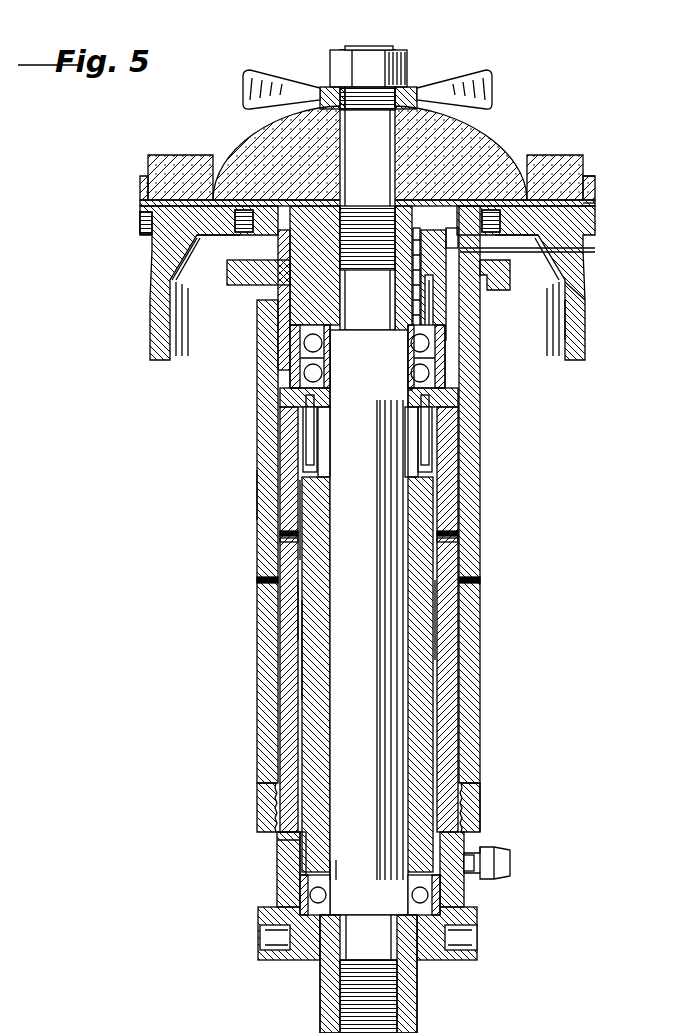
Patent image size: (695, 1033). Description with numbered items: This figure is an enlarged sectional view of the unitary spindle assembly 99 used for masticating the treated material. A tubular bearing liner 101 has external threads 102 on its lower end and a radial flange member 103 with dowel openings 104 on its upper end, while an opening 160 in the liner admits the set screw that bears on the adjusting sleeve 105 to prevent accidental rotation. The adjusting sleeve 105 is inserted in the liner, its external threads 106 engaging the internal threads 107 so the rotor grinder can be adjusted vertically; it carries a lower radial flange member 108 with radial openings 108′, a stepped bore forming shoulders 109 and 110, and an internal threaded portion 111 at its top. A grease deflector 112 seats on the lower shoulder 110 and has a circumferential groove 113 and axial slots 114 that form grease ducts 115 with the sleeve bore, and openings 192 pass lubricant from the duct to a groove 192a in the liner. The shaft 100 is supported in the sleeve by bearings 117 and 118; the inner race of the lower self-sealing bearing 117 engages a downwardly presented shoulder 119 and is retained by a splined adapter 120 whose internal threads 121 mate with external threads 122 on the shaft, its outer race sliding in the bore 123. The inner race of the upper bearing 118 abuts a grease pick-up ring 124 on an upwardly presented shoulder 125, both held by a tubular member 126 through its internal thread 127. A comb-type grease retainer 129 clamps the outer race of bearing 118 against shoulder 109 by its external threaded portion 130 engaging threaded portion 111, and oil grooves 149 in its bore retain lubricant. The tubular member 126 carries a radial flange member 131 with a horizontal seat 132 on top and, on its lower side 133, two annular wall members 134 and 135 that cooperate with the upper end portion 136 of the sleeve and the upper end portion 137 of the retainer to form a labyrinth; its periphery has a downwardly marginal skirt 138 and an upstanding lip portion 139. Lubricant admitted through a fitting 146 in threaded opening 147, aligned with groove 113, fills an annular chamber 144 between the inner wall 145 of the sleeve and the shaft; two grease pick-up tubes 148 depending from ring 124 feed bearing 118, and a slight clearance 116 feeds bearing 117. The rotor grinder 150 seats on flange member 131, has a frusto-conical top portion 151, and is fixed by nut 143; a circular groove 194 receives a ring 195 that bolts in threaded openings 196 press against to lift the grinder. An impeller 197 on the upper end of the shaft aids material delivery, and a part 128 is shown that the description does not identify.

The unitary spindle assembly 99 is at (258, 487).
The shaft 100 is at (390, 46).
The tubular bearing liner 101 is at (482, 745).
The external threads 102 is at (482, 796).
The radial flange member 103 is at (580, 290).
The dowel openings 104 is at (586, 296).
The adjusting sleeve 105 is at (455, 637).
The external threads 106 is at (258, 800).
The internal threads 107 is at (285, 838).
The radial flange member 108 is at (262, 913).
The openings 108′ is at (262, 942).
The shoulder 109 is at (290, 397).
The shoulder 110 is at (285, 895).
The internal threaded portion 111 is at (262, 264).
The grease deflector 112 is at (312, 732).
The circumferential groove 113 is at (300, 855).
The axially formed slots 114 is at (305, 650).
The grease ducts 115 is at (300, 515).
The clearance 116 is at (298, 605).
The bearing 117 is at (440, 898).
The bearing 118 is at (300, 374).
The shoulder 119 is at (330, 870).
The splined adapter 120 is at (418, 1020).
The internal threads 121 is at (408, 995).
The external threads 122 is at (340, 1005).
The bore 123 is at (302, 897).
The grease pick-up ring 124 is at (458, 397).
The shoulder 125 is at (395, 403).
The tubular member 126 is at (304, 337).
The internal thread 127 is at (290, 270).
The support bar 128 is at (284, 312).
The grease retainer 129 is at (438, 292).
The external threaded portion 130 is at (505, 283).
The radial flange member 131 is at (190, 228).
The horizontal seat 132 is at (592, 208).
The lower side 133 is at (200, 252).
The annular wall member 134 is at (253, 238).
The annular wall member 135 is at (575, 255).
The upper end portion 136 is at (443, 274).
The upper end portion 137 is at (414, 298).
The downwardly marginal skirt 138 is at (150, 320).
The upstanding lip portion 139 is at (143, 203).
The nut 143 is at (410, 63).
The annular chamber 144 is at (440, 466).
The inner wall 145 is at (302, 466).
The admitting fitting 146 is at (510, 853).
The threaded opening 147 is at (458, 866).
The grease pick-up tubes 148 is at (305, 446).
The oil grooves 149 is at (438, 312).
The rotor grinder 150 is at (586, 178).
The frusto-conical top portion 151 is at (515, 130).
The opening 160 is at (480, 575).
The openings 192 is at (465, 535).
The groove 192a is at (460, 542).
The circular groove 194 is at (140, 225).
The ring 195 is at (213, 160).
The threaded openings 196 is at (543, 180).
The impeller 197 is at (488, 75).